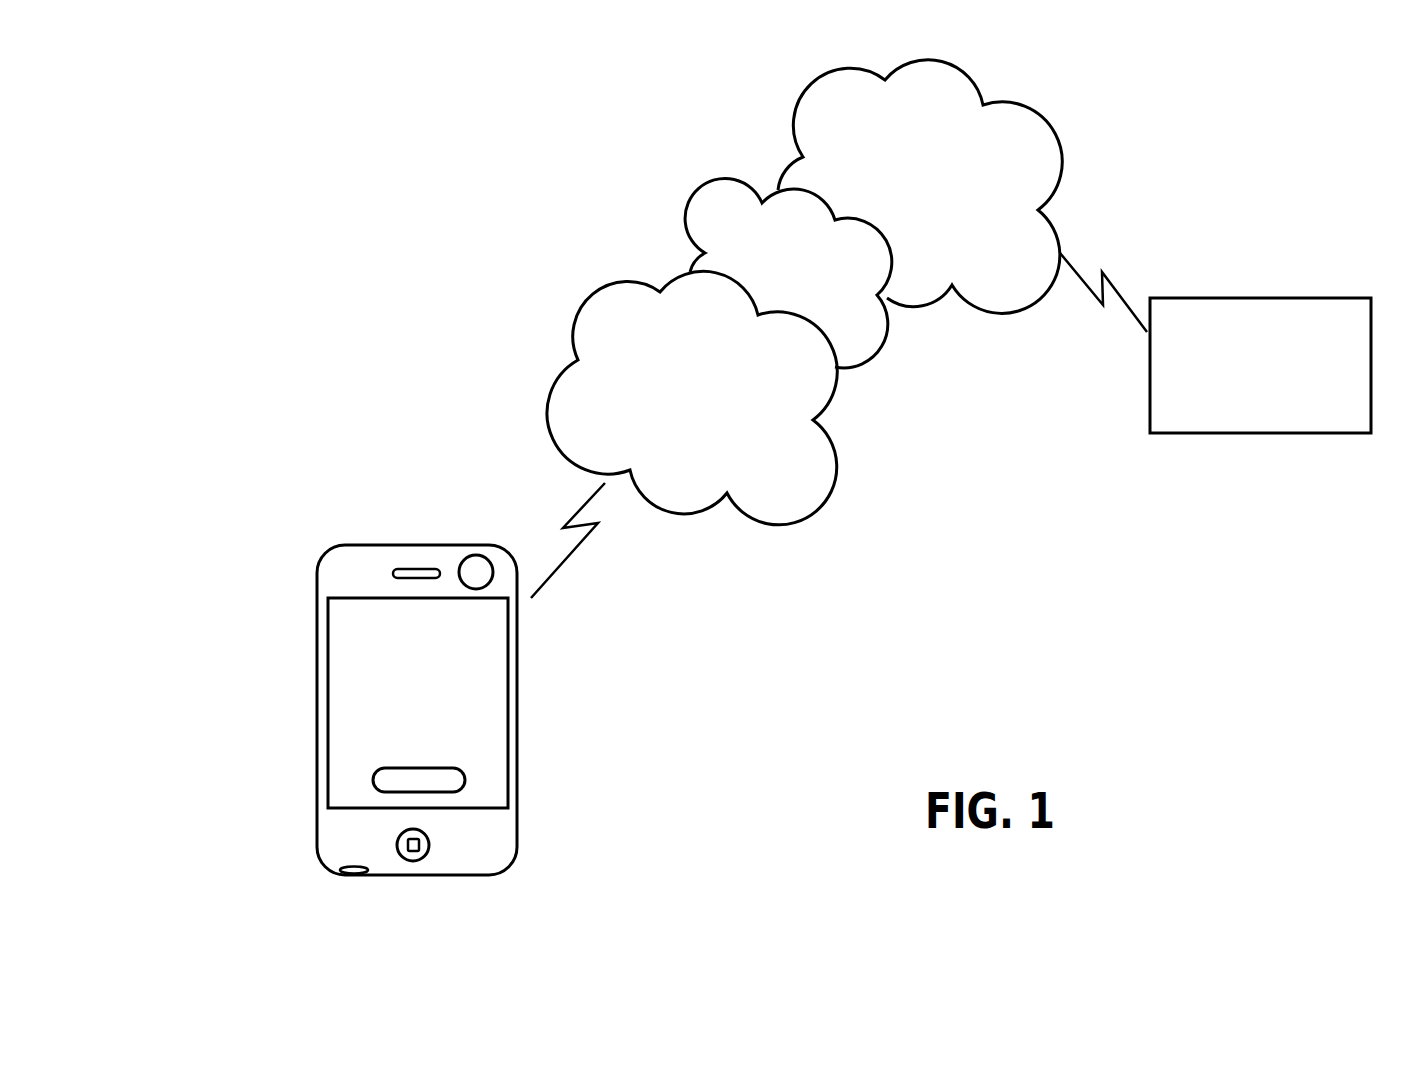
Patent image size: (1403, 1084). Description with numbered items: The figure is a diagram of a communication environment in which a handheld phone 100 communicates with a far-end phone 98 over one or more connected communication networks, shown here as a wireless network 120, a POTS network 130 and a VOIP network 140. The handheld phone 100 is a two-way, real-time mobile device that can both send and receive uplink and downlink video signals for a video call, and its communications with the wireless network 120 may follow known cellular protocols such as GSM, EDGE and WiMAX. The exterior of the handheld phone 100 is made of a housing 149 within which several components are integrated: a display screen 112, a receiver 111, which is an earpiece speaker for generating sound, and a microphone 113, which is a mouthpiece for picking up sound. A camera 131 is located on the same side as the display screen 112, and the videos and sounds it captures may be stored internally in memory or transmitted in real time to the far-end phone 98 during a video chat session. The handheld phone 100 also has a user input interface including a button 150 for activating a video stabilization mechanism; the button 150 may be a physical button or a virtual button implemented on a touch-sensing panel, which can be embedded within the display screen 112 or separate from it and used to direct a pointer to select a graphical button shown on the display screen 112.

The handheld phone 100 is at (454, 670).
The housing 149 is at (338, 635).
The display screen 112 is at (508, 653).
The receiver 111 is at (407, 568).
The camera 131 is at (478, 563).
The button 150 is at (447, 778).
The microphone 113 is at (350, 868).
The wireless network 120 is at (679, 436).
The POTS network 130 is at (776, 296).
The VOIP network 140 is at (905, 221).
The far-end phone 98 is at (1244, 400).